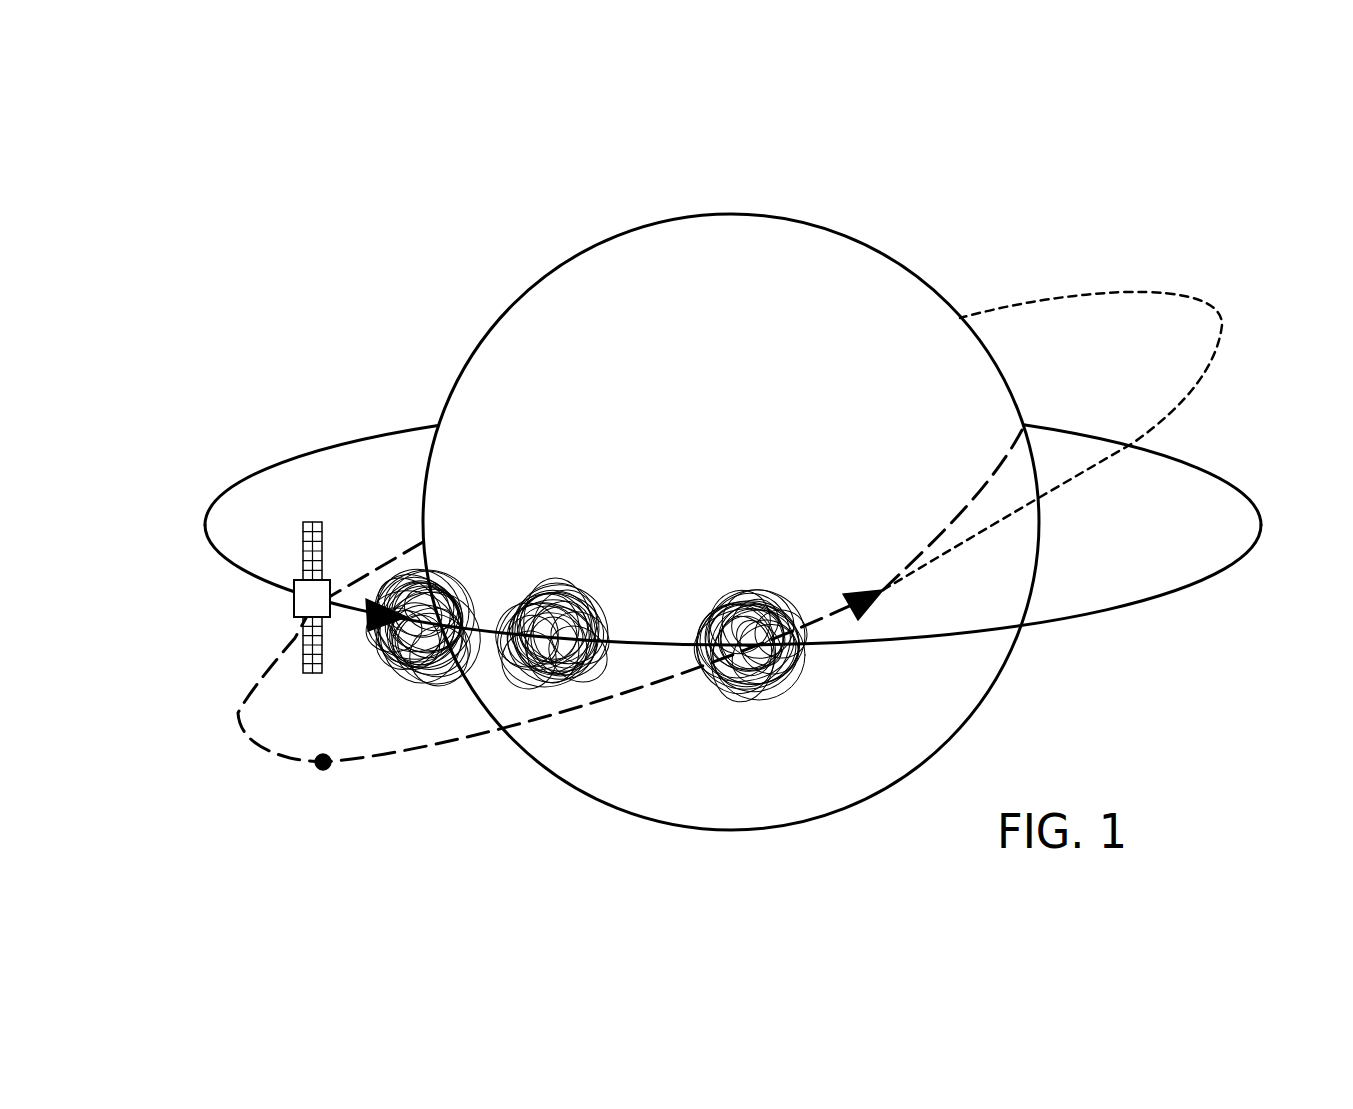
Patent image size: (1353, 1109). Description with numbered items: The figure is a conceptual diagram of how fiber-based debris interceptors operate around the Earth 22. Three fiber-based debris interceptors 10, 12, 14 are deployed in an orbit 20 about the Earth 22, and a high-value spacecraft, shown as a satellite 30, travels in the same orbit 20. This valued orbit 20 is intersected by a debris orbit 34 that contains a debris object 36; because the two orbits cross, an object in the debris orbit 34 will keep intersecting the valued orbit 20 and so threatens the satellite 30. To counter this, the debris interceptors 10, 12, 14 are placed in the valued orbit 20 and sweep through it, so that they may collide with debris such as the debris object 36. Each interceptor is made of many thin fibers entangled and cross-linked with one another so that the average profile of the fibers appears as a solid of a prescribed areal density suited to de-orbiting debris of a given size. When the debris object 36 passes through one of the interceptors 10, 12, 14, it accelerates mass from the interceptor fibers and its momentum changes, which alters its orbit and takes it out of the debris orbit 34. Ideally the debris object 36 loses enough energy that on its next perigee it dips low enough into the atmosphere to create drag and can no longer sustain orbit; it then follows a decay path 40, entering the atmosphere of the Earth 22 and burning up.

The fiber-based debris interceptor 10 is at (437, 687).
The fiber-based debris interceptor 12 is at (545, 693).
The fiber-based debris interceptor 14 is at (745, 697).
The orbit 20 is at (212, 553).
The Earth 22 is at (880, 290).
The satellite 30 is at (297, 608).
The debris orbit 34 is at (240, 703).
The debris object 36 is at (323, 768).
The decay path 40 is at (1000, 470).